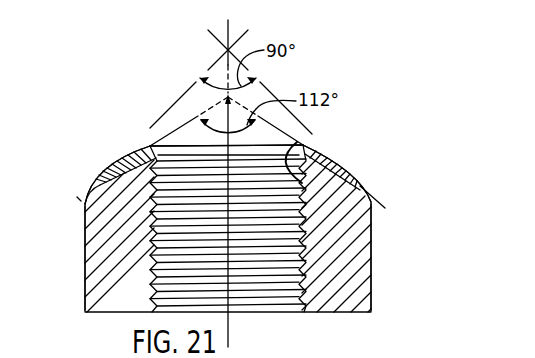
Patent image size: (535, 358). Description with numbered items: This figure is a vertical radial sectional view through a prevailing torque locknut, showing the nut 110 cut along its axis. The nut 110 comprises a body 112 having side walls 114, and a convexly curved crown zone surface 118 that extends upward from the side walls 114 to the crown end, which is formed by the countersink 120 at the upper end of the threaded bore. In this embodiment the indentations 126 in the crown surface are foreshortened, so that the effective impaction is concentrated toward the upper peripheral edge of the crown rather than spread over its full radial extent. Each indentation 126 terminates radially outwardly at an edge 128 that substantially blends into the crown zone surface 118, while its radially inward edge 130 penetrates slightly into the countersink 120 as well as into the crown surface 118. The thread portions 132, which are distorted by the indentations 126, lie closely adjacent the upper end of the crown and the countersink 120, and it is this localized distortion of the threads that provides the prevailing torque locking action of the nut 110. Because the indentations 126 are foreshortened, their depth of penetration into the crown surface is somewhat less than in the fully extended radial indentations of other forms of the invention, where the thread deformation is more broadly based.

The nut 110 is at (373, 235).
The body 112 is at (365, 283).
The side walls 114 is at (85, 290).
The crown zone surface 118 is at (97, 183).
The countersink 120 is at (180, 150).
The indentations 126 is at (120, 162).
The edges 128 is at (370, 190).
The radially inward edge 130 is at (152, 145).
The thread portions 132 is at (298, 143).